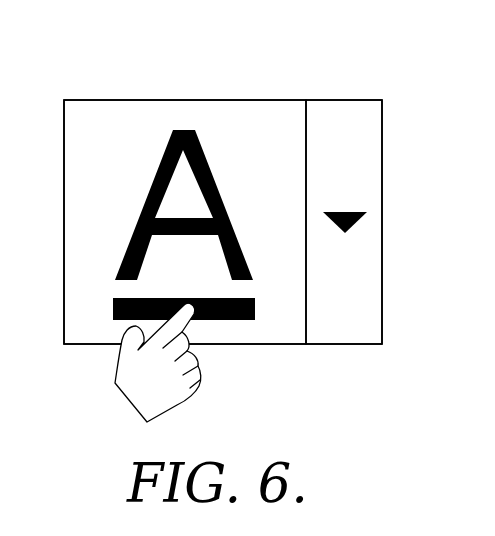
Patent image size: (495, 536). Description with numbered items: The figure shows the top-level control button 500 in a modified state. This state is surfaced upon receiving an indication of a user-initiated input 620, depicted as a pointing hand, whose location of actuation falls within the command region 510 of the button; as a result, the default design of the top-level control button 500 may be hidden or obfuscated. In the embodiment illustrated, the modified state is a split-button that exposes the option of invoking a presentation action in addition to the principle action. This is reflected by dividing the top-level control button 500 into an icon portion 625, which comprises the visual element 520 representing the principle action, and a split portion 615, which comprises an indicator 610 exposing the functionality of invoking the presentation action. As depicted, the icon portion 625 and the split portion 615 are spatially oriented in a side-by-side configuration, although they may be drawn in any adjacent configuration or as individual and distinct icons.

The top-level control button 500 is at (86, 58).
The command region 510 is at (383, 170).
The visual element 520 is at (205, 153).
The indicator 610 is at (357, 225).
The split portion 615 is at (339, 298).
The user-initiated input 620 is at (117, 376).
The icon portion 625 is at (138, 118).